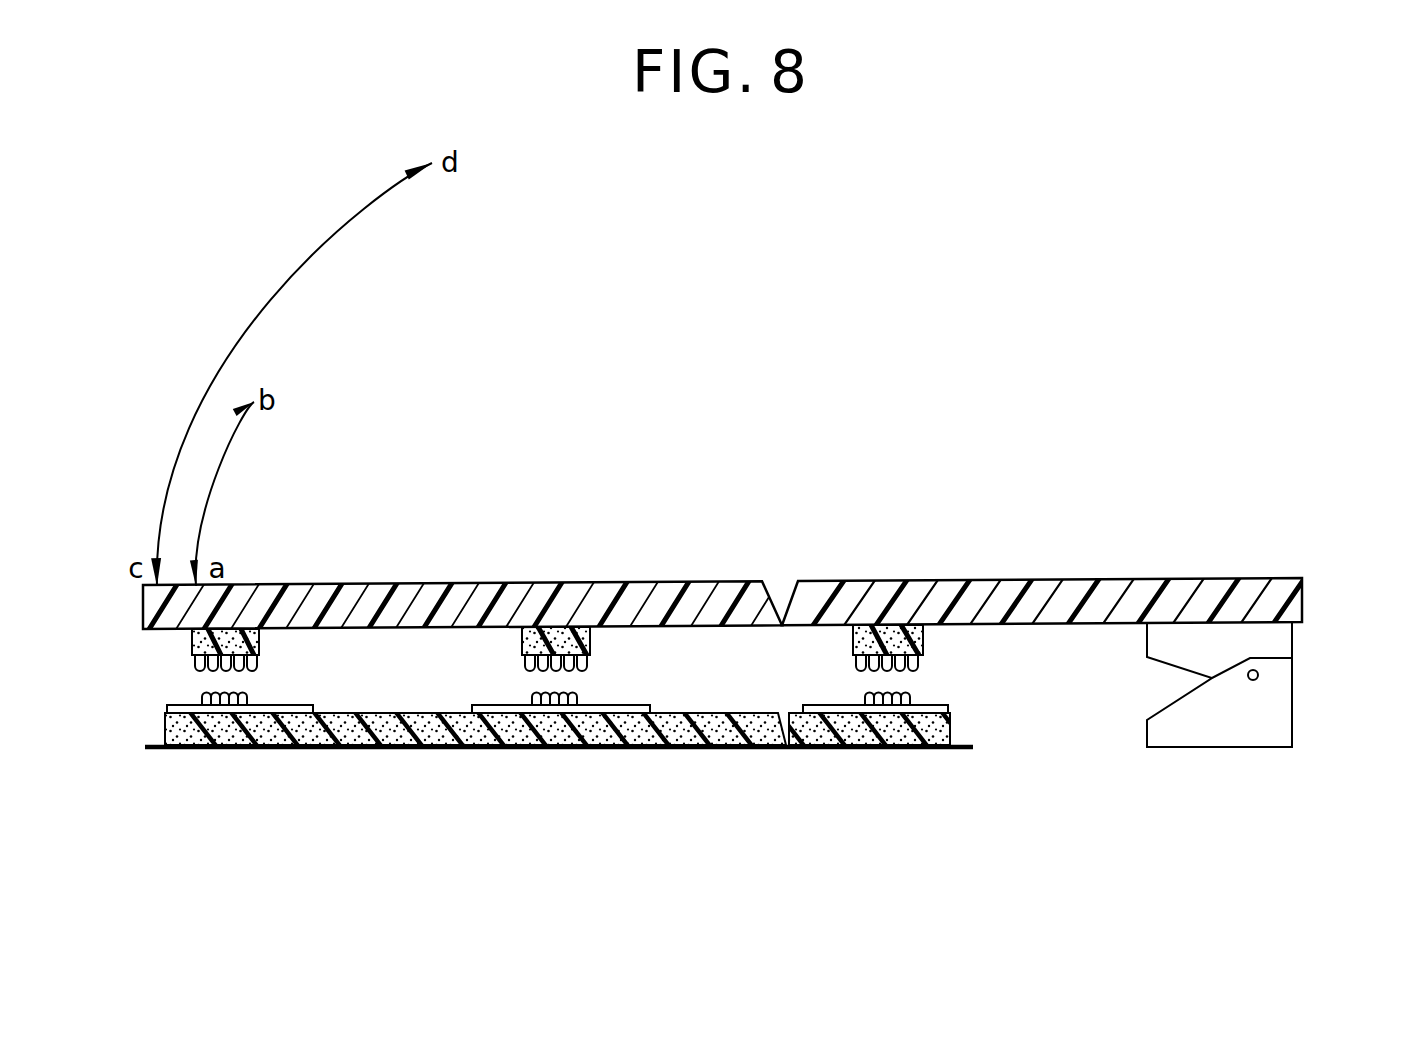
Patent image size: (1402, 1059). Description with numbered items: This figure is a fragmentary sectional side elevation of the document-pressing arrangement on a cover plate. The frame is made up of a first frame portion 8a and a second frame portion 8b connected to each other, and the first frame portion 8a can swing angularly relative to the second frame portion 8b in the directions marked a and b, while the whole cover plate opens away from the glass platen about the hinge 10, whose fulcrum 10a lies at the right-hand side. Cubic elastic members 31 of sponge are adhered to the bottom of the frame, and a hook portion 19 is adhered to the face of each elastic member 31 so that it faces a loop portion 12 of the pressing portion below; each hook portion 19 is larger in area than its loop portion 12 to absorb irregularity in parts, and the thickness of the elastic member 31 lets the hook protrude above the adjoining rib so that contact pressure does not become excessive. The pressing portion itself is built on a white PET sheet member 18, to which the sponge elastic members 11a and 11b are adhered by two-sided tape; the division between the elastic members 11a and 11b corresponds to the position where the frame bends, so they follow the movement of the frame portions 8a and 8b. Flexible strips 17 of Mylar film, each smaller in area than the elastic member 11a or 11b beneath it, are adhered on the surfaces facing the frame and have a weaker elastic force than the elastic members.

The first frame portion 8a is at (497, 593).
The second frame portion 8b is at (1040, 586).
The hinge 10 is at (1250, 730).
The fulcrum of the frame 10a is at (1262, 675).
The elastic member 11a is at (167, 732).
The elastic member 11b is at (952, 722).
The loop portion 12 is at (232, 692).
The flexible strip 17 is at (182, 705).
The sheet member 18 is at (908, 750).
The hook portion 19 is at (193, 664).
The elastic member 31 is at (258, 642).